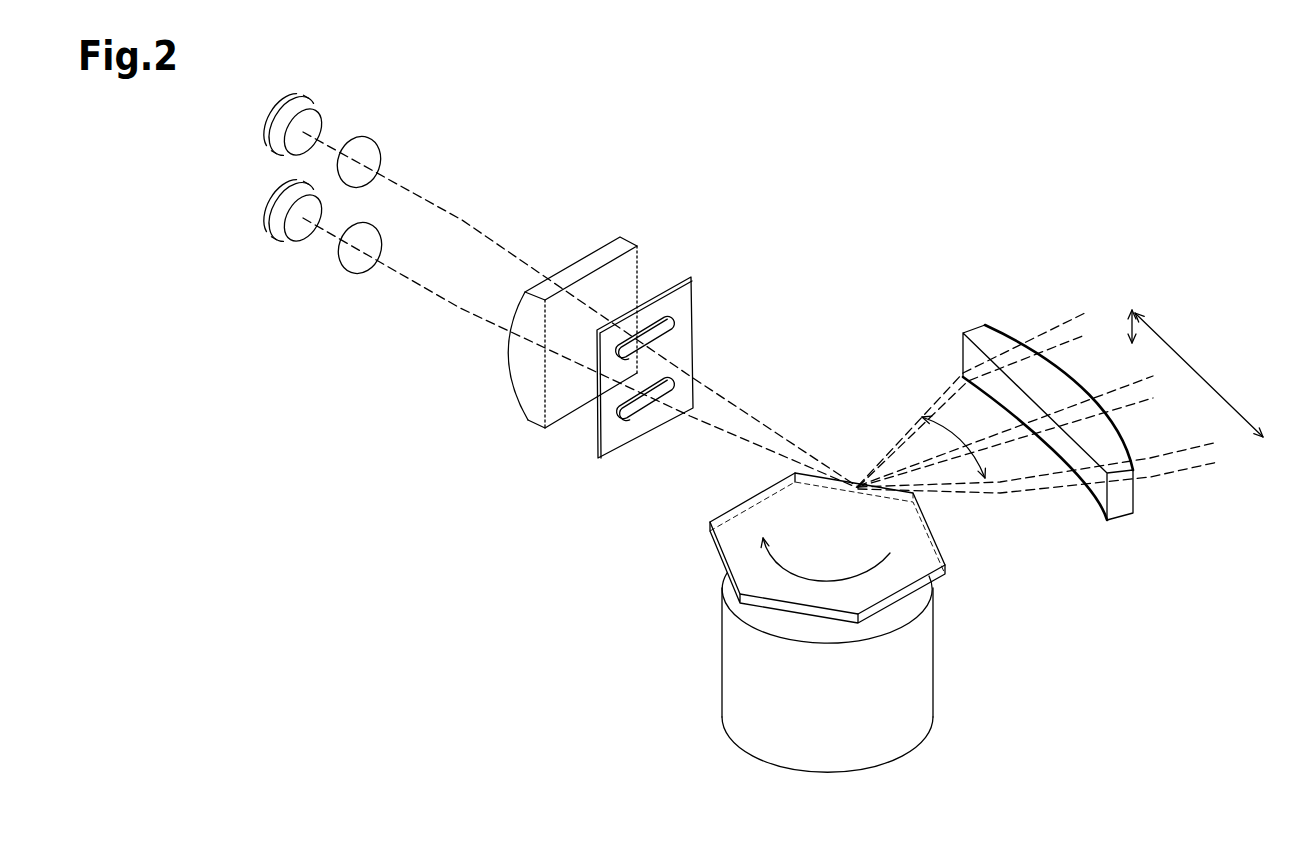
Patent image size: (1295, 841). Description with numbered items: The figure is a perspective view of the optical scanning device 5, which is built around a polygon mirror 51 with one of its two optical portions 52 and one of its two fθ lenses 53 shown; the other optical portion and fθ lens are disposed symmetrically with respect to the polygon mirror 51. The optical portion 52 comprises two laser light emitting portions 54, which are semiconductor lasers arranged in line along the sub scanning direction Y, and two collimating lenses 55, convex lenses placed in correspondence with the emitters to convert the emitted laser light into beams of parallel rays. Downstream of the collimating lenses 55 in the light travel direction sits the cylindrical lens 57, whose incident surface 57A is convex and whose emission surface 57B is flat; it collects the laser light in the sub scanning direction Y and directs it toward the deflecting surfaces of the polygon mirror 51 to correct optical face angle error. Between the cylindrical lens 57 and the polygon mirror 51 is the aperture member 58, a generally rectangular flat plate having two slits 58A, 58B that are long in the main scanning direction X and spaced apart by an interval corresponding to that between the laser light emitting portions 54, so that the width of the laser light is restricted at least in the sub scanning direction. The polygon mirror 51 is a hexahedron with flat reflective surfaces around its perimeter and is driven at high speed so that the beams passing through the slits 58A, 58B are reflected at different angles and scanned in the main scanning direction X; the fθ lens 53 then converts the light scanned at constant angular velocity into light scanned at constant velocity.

The optical scanning device 5 is at (1002, 178).
The optical portion 52 is at (718, 145).
The laser light emitting portion 54 is at (312, 100).
The collimating lens 55 is at (377, 140).
The cylindrical lens 57 is at (583, 298).
The incident surface 57A is at (512, 373).
The emission surface 57B is at (623, 267).
The aperture member 58 is at (687, 378).
The aperture 58A is at (667, 326).
The aperture 58B is at (623, 416).
The polygon mirror 51 is at (946, 556).
The fθ lens 53 is at (1123, 518).